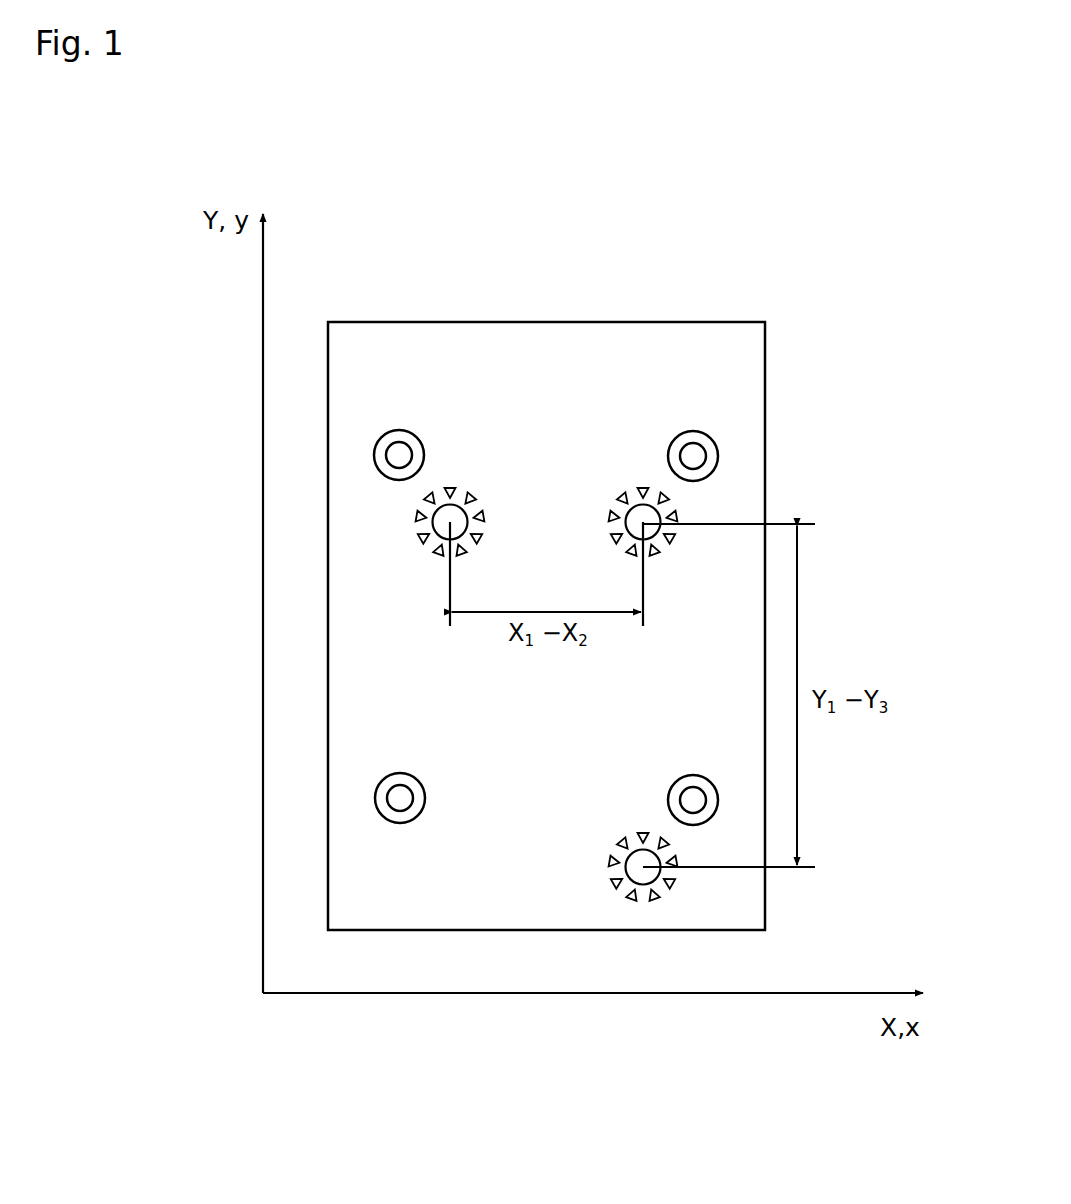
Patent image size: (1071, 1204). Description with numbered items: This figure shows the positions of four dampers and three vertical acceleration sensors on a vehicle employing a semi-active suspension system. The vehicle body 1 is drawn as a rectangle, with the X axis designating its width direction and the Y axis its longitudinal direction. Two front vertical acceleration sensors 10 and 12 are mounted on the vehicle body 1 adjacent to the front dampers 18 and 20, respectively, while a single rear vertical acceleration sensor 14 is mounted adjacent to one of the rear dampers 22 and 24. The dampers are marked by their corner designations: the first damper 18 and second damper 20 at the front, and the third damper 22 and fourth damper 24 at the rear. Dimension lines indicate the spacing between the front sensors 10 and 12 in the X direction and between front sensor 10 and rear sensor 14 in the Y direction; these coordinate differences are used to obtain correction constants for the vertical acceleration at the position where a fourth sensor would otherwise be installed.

The vehicle body 1 is at (763, 373).
The vertical acceleration sensor 10 is at (643, 492).
The vertical acceleration sensor 12 is at (473, 494).
The vertical acceleration sensor 14 is at (655, 884).
The first damper 18 is at (706, 455).
The second damper 20 is at (397, 433).
The third damper 22 is at (706, 799).
The fourth damper 24 is at (388, 795).